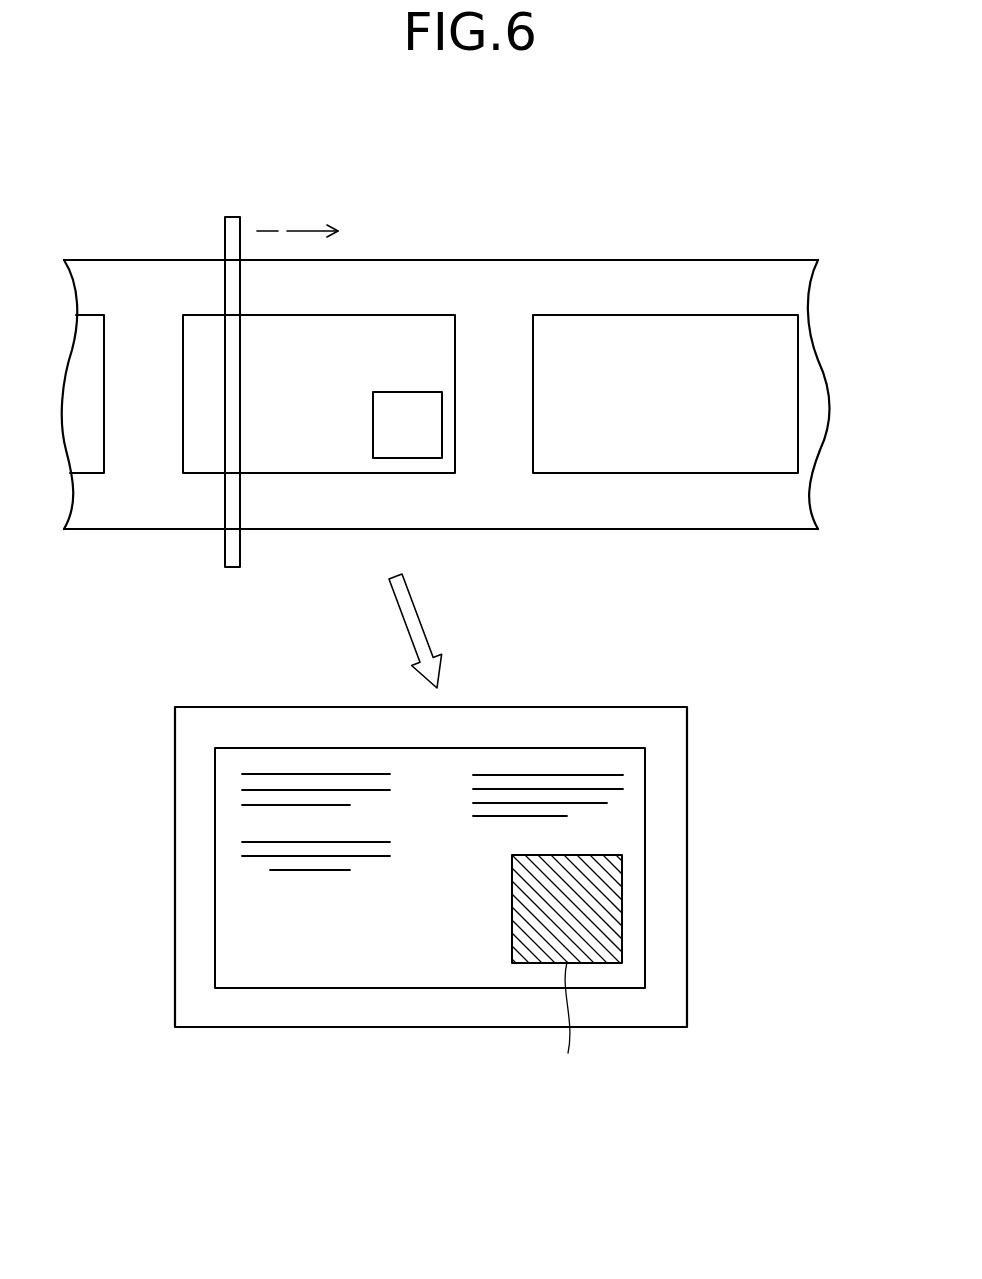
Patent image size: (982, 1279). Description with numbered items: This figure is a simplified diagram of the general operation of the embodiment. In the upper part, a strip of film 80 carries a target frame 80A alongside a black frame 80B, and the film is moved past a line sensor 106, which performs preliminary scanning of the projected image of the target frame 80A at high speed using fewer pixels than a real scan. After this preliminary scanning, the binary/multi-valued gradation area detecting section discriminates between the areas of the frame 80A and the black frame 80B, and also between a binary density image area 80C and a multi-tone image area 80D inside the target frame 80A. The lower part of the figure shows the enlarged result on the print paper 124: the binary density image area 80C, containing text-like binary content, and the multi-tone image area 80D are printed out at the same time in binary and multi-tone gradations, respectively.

The recording medium (web) 80 is at (717, 258).
The target frame 80A is at (364, 313).
The black frame 80B is at (518, 313).
The binary density image area 80C is at (435, 337).
The multi-tone image area 80D is at (415, 433).
The line sensor 106 is at (225, 558).
The print paper 124 is at (687, 870).